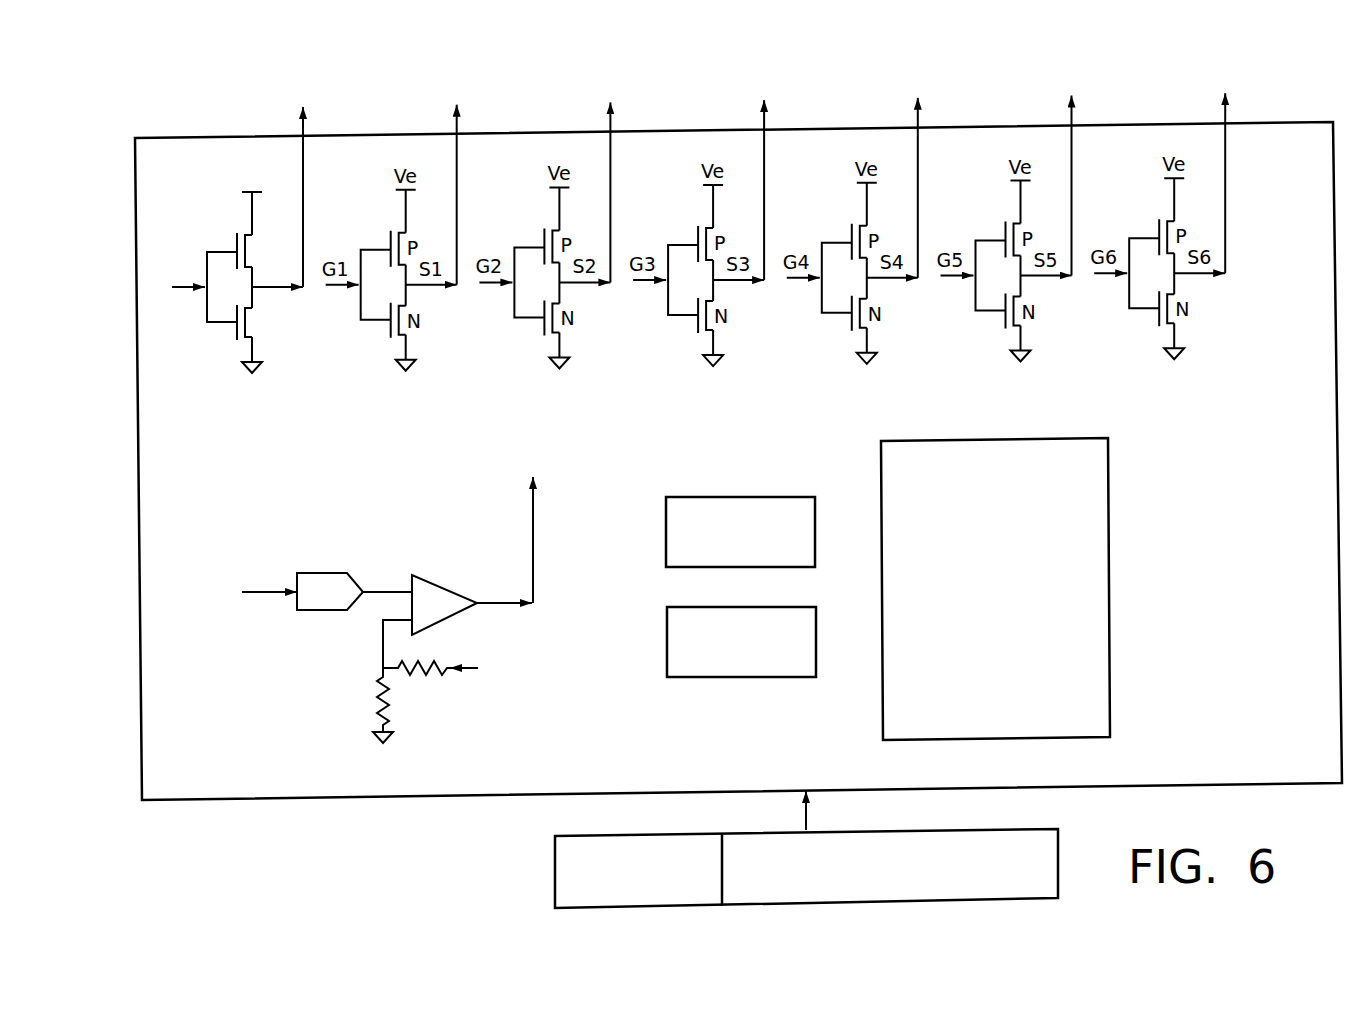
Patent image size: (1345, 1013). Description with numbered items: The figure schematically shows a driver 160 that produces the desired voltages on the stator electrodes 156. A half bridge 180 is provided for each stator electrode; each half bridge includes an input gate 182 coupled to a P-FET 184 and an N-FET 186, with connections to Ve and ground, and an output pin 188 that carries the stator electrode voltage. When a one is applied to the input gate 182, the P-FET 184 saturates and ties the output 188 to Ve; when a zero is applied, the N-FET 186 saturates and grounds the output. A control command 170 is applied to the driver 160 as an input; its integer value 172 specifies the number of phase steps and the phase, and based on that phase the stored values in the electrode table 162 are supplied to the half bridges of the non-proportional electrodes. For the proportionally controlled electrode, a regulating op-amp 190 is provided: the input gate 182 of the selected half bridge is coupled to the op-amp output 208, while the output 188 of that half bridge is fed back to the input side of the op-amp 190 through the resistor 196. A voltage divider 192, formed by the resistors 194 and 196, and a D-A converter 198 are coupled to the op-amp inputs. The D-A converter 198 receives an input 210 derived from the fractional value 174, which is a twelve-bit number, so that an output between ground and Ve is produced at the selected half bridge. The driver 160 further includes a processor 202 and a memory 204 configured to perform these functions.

The stator electrodes 156 is at (312, 77).
The driver 160 is at (207, 800).
The electrode table 162 is at (952, 440).
The control command 170 is at (694, 858).
The integer value 172 is at (582, 872).
The fractional value 174 is at (957, 850).
The half bridge 180 is at (220, 324).
The input gate 182 is at (177, 255).
The P-FET 184 is at (233, 227).
The N-FET 186 is at (232, 350).
The output pin 188 is at (277, 292).
The regulating op-amp 190 is at (428, 577).
The voltage divider 192 is at (420, 700).
The resistor 194 is at (365, 705).
The resistor 196 is at (448, 652).
The D-A converter 198 is at (320, 572).
The processor 202 is at (747, 497).
The memory 204 is at (747, 677).
The output 208 is at (505, 600).
The input 210 is at (263, 595).